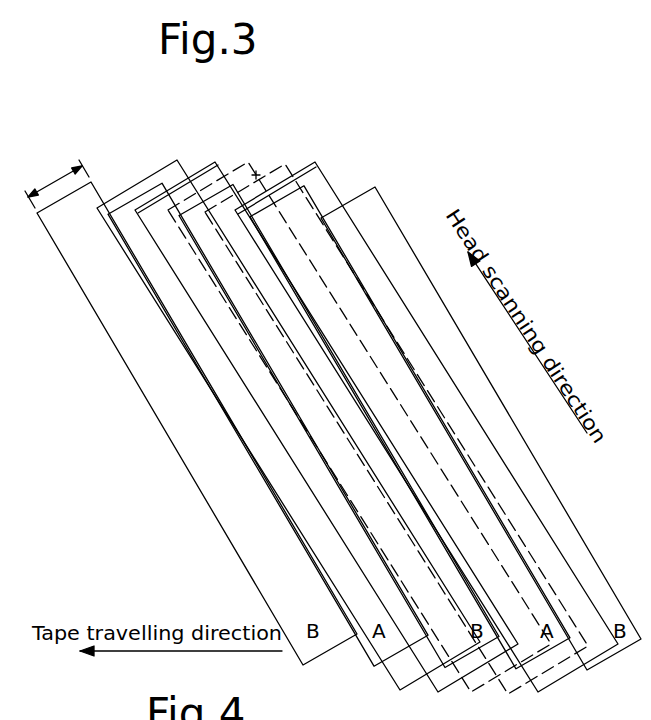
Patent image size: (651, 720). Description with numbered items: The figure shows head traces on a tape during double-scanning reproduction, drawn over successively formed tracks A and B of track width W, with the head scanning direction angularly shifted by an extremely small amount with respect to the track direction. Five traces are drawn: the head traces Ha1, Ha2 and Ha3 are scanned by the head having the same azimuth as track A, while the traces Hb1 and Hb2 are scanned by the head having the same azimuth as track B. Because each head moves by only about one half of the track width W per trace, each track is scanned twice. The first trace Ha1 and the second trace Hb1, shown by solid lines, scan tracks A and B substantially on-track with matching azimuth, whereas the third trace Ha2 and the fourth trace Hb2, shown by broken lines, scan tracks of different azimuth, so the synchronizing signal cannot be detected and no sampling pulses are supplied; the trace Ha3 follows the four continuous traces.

The first head trace Ha1 is at (130, 186).
The second head trace Hb1 is at (200, 172).
The third head trace Ha2 is at (236, 170).
The fourth head trace Hb2 is at (284, 165).
The fifth head trace Ha3 is at (312, 165).
The track width W is at (57, 184).